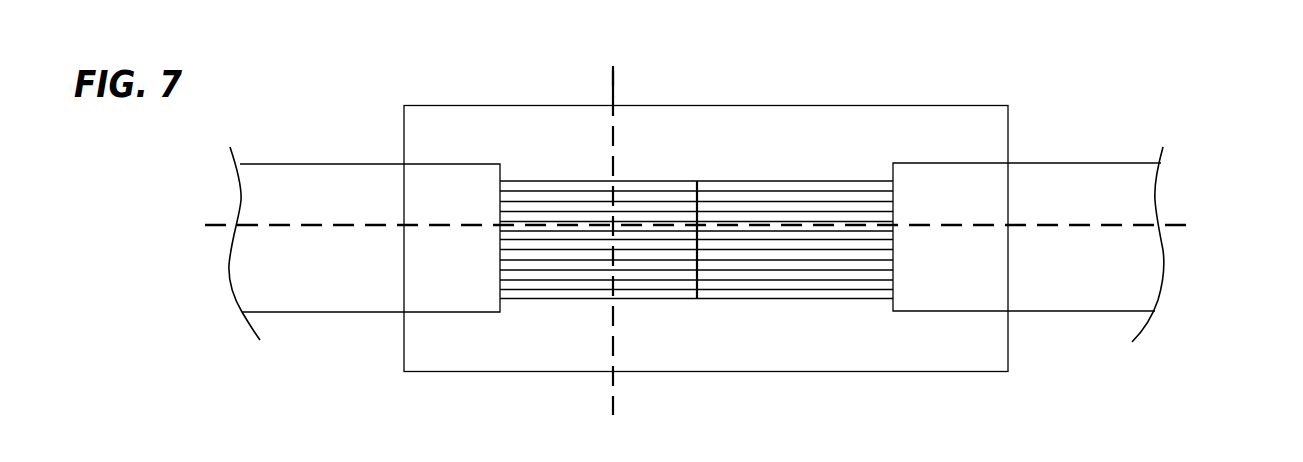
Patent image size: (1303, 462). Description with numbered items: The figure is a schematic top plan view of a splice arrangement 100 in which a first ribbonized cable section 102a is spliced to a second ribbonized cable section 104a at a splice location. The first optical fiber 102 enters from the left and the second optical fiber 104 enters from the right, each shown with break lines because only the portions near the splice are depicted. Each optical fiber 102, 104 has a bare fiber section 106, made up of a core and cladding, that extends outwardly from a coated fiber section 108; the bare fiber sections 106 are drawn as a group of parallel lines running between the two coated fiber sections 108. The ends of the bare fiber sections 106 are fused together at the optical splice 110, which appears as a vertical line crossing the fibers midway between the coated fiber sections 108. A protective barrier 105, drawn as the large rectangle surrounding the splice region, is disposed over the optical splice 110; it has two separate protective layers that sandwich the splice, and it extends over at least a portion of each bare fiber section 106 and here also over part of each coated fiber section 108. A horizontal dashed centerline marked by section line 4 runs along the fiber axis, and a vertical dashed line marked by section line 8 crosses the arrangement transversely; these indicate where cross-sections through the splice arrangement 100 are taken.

The splice arrangement 100 is at (1024, 116).
The first optical fiber 102 is at (297, 313).
The first cable section 102a is at (355, 273).
The second optical fiber 104 is at (1079, 312).
The second cable section 104a is at (1096, 274).
The protective barrier 105 is at (787, 378).
The bare fiber section 106 is at (556, 180).
The coated fiber section 108 is at (753, 180).
The optical splice 110 is at (699, 310).
The section line 4- 4 is at (206, 246).
The section line 8- 8 is at (637, 83).